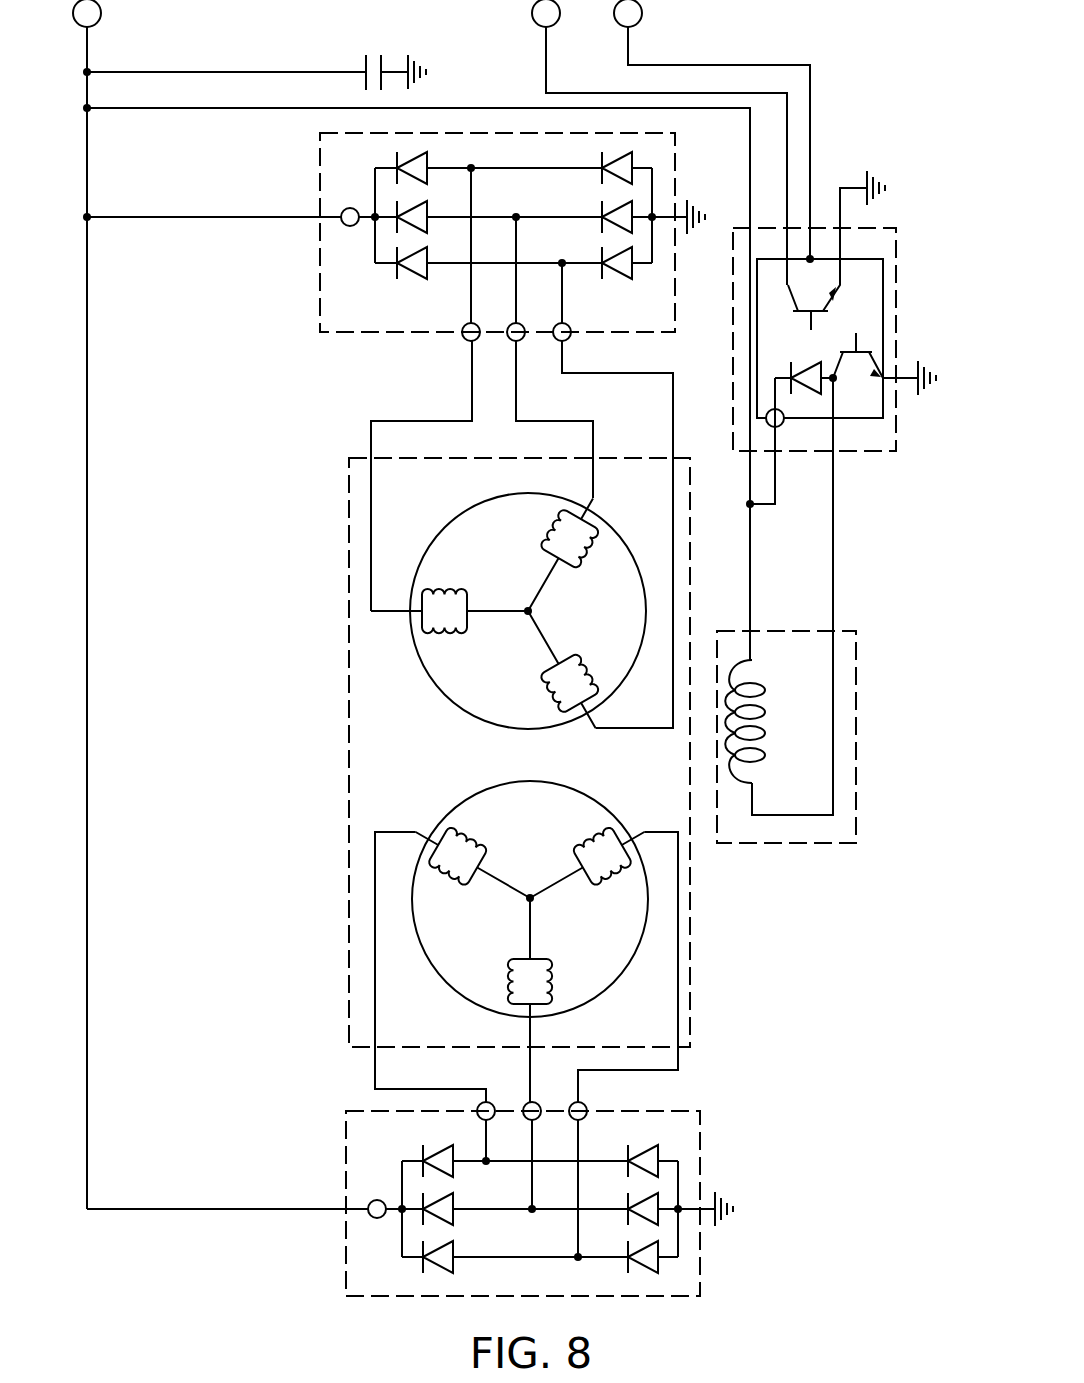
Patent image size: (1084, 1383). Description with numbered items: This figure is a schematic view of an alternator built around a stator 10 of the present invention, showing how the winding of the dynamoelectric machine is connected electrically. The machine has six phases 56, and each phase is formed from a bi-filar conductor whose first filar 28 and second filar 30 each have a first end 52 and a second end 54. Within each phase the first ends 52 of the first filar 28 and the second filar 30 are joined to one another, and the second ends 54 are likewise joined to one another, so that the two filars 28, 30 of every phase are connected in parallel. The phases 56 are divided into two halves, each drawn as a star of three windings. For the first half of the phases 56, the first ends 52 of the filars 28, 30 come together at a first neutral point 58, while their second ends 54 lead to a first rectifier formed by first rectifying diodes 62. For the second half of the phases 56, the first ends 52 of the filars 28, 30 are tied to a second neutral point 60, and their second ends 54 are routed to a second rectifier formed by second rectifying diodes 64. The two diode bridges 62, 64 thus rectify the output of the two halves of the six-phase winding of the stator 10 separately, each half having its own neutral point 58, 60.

The stator 10 is at (346, 736).
The first filar 28 is at (555, 549).
The second filar 30 is at (440, 595).
The first end 52 is at (540, 587).
The second end 54 is at (615, 729).
The phases 56 is at (565, 530).
The first neutral point 58 is at (530, 894).
The second neutral point 60 is at (371, 516).
The first rectifying diodes 62 is at (342, 1146).
The second rectifying diodes 64 is at (486, 128).